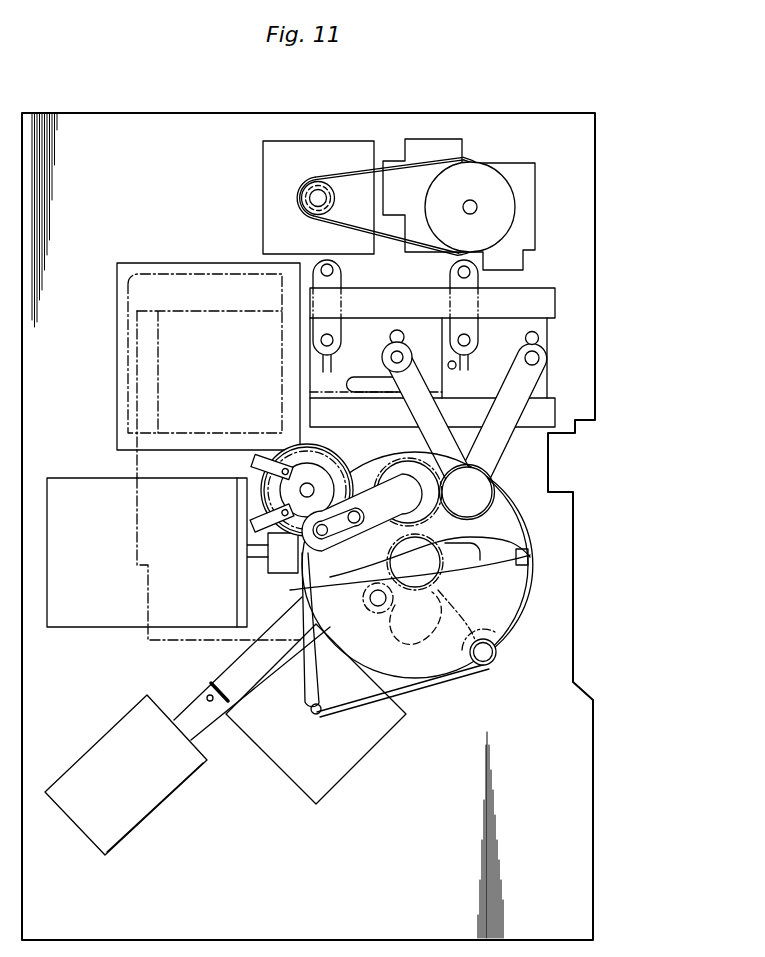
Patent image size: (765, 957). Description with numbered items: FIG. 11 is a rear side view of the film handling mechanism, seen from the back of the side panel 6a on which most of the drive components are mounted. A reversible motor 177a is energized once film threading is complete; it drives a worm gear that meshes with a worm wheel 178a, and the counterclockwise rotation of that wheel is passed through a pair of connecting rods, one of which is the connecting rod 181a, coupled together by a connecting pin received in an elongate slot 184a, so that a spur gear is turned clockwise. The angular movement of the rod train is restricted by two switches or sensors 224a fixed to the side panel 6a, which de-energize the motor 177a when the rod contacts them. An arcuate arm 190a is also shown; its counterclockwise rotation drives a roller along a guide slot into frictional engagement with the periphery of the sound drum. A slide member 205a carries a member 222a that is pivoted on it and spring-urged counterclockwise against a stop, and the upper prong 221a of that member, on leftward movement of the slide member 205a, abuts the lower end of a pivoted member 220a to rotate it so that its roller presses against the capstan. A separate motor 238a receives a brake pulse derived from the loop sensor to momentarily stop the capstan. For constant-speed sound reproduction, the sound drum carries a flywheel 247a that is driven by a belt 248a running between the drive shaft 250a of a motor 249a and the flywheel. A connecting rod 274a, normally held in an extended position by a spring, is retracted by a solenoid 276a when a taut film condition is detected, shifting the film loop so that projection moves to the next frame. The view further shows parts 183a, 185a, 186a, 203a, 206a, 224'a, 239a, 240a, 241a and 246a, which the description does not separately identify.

The side panel 6a is at (595, 880).
The reversible motor 177a is at (85, 632).
The worm wheel 178a is at (253, 493).
The connecting rod 181a is at (380, 522).
The pin 183a is at (353, 599).
The elongate slot 184a is at (383, 455).
The pivot pin 185a is at (540, 360).
The lever arm 186a is at (498, 446).
The arcuate arm 190a is at (483, 525).
The support bar 203a is at (555, 296).
The slide member 205a is at (548, 330).
The stop pin 206a is at (540, 340).
The pivoted member 220a is at (466, 258).
The upper prong 221a is at (450, 335).
The member 222a is at (470, 302).
The switches or sensors 224a is at (248, 532).
The coupling tabs 224'a is at (233, 467).
The motor 238a is at (264, 158).
The drive pulley 239a is at (301, 194).
The belt and mounting bracket 240a is at (425, 165).
The driven pulley 241a is at (478, 170).
The cam rim pad 246a is at (517, 555).
The flywheel 247a is at (452, 665).
The belt 248a is at (413, 690).
The motor 249a is at (362, 750).
The drive shaft 250a is at (322, 718).
The connecting rod 274a is at (226, 677).
The solenoid 276a is at (103, 748).